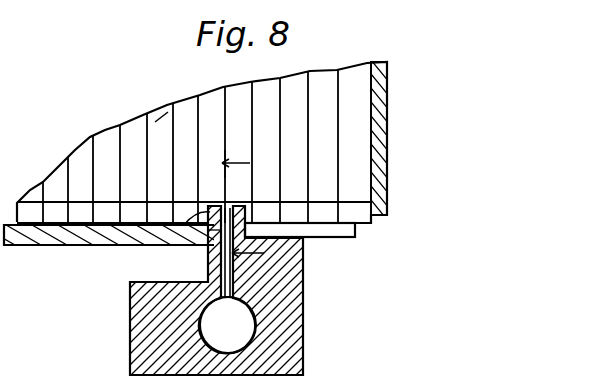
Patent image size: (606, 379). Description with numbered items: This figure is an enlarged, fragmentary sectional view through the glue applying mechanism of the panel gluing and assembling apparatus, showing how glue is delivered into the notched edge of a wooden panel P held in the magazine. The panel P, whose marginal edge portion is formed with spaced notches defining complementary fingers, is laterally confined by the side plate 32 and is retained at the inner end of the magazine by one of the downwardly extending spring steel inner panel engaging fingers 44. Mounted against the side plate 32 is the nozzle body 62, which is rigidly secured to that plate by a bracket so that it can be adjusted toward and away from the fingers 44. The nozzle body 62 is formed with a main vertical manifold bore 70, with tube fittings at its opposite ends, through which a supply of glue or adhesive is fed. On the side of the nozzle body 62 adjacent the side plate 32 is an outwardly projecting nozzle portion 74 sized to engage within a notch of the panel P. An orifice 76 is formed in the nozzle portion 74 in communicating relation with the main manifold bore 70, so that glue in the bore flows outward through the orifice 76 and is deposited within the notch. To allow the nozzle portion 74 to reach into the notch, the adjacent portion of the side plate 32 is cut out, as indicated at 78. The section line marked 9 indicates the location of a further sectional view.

The wooden panel P is at (198, 100).
The inner panel engaging fingers 44 is at (391, 60).
The side plate 32 is at (13, 246).
The nozzle body 62 is at (148, 321).
The main vertical manifold bore 70 is at (256, 320).
The nozzle portion 74 is at (248, 206).
The dimension reference 9 is at (254, 211).
The cut out 78 is at (159, 244).
The orifice 76 is at (208, 253).